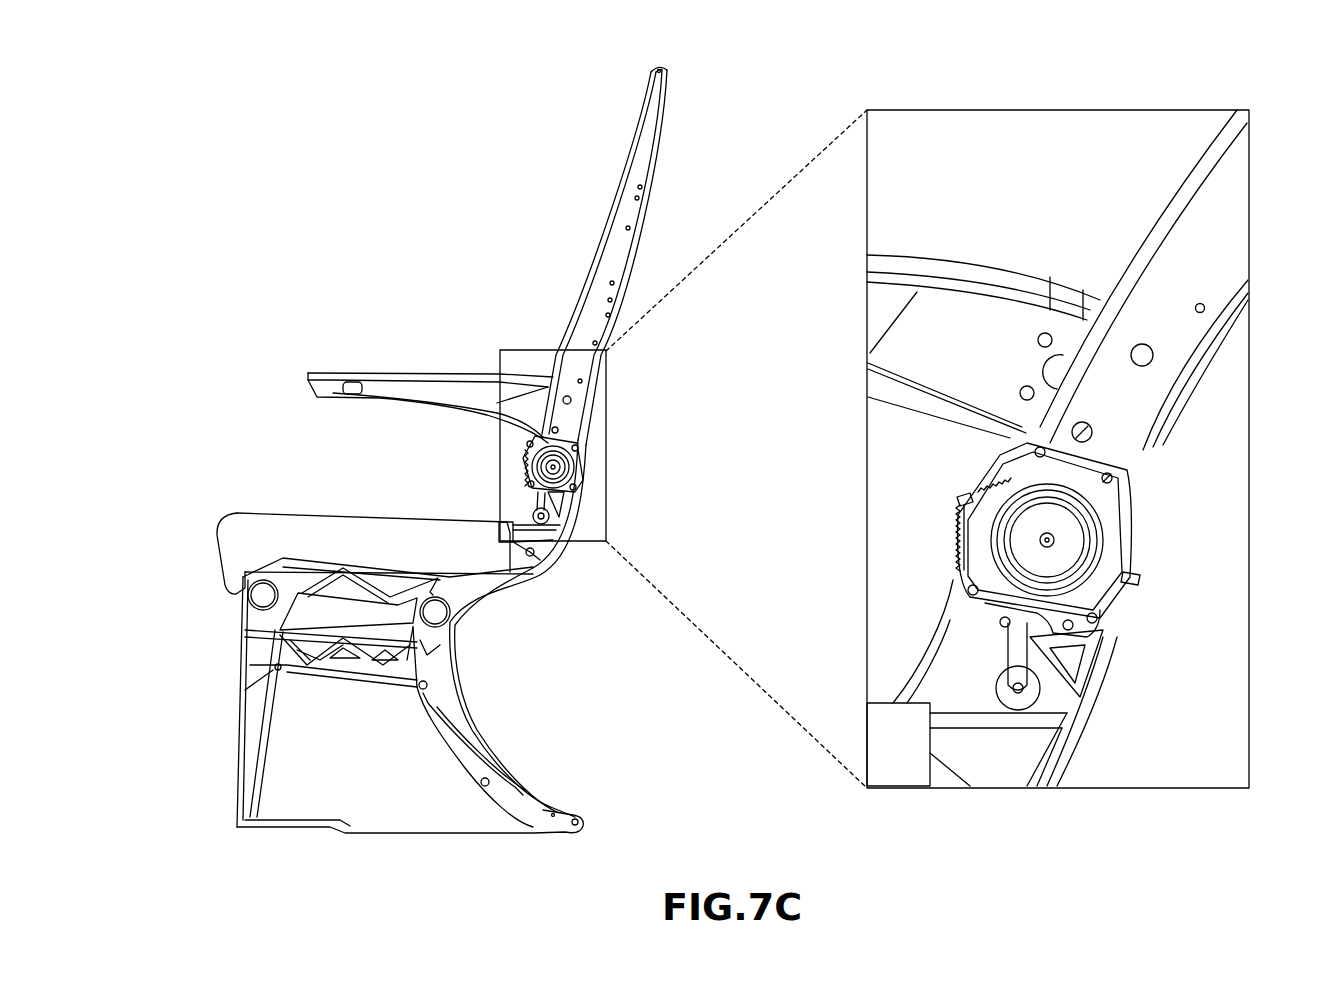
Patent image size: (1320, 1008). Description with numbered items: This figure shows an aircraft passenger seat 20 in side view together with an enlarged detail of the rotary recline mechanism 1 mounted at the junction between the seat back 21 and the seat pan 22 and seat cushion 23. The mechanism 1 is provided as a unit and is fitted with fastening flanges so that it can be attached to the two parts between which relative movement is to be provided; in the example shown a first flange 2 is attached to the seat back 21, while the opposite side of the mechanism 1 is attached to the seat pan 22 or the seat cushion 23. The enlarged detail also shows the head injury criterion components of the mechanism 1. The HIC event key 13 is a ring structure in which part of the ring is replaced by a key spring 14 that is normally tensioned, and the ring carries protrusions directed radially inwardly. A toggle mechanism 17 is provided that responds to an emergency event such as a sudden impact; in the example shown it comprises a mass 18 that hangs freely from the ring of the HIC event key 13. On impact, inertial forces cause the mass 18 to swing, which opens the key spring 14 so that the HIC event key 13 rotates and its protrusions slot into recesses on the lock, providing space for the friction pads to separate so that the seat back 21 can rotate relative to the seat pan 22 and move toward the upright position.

The mechanism 1 is at (936, 466).
The first flange 2 is at (1110, 497).
The HIC event key 13 is at (1122, 540).
The key spring 14 is at (957, 535).
The toggle mechanism 17 is at (1040, 627).
The mass 18 is at (1033, 690).
The seat 20 is at (565, 42).
The seat back 21 is at (614, 216).
The seat pan 22 is at (269, 572).
The seat cushion 23 is at (222, 568).